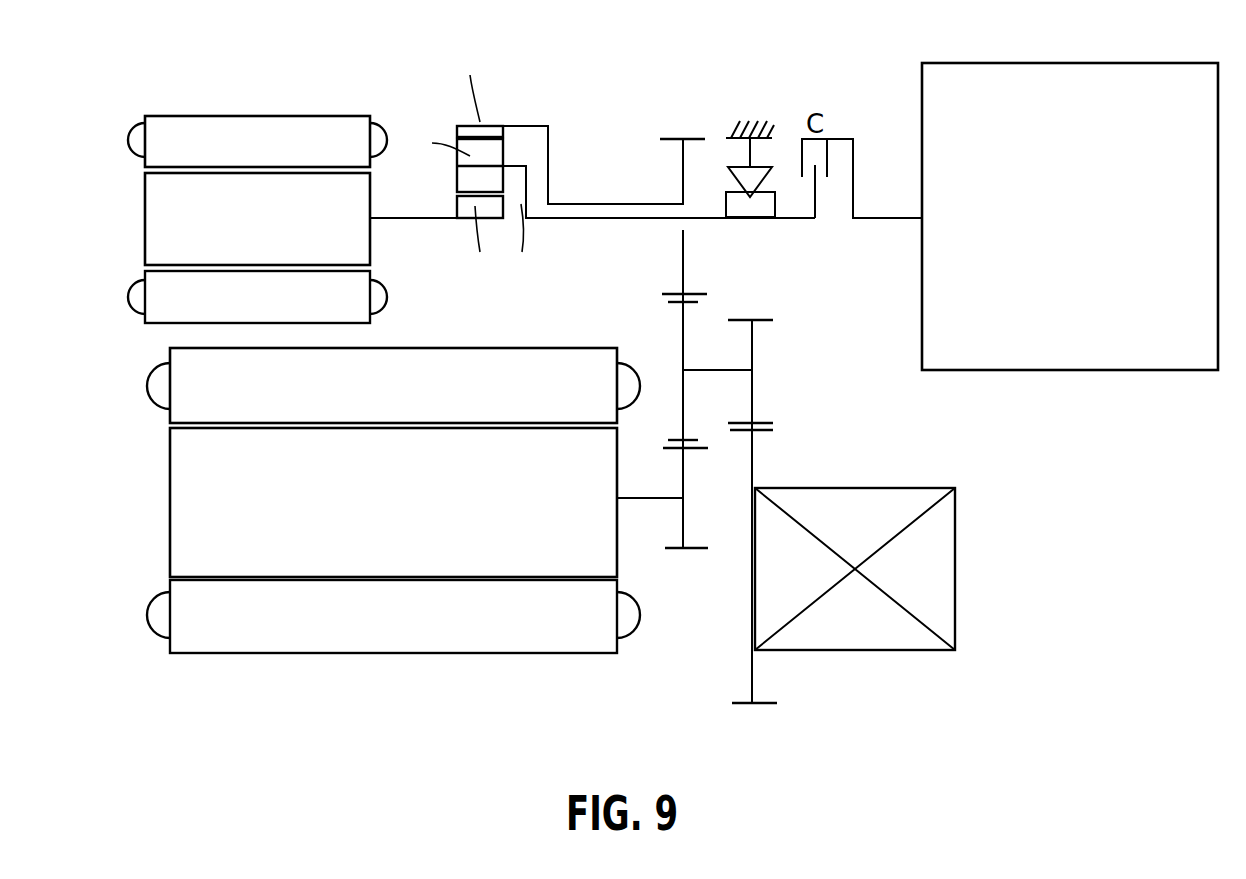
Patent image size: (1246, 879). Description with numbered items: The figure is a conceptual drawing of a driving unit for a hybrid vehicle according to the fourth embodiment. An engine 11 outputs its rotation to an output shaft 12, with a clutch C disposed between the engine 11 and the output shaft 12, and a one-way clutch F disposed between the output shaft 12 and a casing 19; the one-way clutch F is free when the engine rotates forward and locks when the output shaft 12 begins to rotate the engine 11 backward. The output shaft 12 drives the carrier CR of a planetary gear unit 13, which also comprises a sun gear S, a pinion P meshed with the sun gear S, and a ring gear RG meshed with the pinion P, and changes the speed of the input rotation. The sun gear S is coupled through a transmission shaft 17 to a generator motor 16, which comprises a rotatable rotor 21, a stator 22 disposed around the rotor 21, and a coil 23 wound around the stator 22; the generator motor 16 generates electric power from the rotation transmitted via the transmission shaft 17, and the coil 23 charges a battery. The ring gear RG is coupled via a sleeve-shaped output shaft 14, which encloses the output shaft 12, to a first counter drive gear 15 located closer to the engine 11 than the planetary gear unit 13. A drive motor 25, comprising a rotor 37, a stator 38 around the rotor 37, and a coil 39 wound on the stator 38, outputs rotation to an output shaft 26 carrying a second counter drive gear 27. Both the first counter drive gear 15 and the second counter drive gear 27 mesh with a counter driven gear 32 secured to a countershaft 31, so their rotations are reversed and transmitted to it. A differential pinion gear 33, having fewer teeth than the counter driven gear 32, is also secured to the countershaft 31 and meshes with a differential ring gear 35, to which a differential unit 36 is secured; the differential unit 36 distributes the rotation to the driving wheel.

The engine 11 is at (1033, 75).
The output shaft 12 is at (622, 217).
The planetary gear unit 13 is at (518, 98).
The output shaft 14 is at (580, 203).
The first counter drive gear 15 is at (680, 138).
The generator motor 16 is at (231, 169).
The transmission shaft 17 is at (428, 222).
The casing 19 is at (752, 120).
The rotor 21 is at (160, 218).
The stator 22 is at (170, 127).
The coil 23 is at (128, 140).
The drive motor 25 is at (348, 529).
The output shaft 26 is at (650, 500).
The second counter drive gear 27 is at (690, 552).
The countershaft 31 is at (712, 366).
The counter driven gear 32 is at (680, 305).
The differential pinion gear 33 is at (760, 318).
The differential ring gear 35 is at (768, 432).
The differential unit 36 is at (937, 486).
The rotor 37 is at (193, 527).
The stator 38 is at (180, 360).
The coil 39 is at (147, 390).